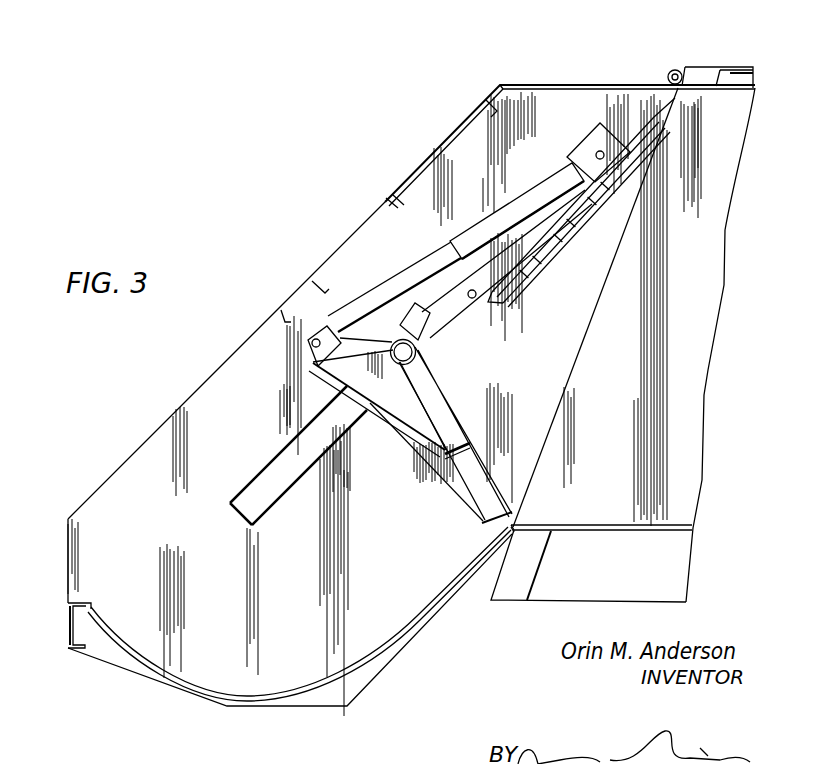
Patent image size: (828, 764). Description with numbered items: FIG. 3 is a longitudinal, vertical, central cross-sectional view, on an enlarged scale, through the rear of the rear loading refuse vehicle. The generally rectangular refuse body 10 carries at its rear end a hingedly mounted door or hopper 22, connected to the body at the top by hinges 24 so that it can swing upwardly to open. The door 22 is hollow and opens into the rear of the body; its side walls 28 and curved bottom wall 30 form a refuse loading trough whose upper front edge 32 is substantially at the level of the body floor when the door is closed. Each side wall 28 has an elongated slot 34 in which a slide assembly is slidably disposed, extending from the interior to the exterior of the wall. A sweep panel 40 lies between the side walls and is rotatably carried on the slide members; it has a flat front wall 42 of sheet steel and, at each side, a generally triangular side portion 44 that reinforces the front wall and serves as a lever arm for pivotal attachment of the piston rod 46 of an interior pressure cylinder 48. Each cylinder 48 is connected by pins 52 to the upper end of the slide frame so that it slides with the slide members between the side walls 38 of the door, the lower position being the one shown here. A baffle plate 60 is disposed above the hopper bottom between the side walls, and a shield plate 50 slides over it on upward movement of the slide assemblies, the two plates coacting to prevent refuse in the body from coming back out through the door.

The refuse body 10 is at (739, 163).
The door 22 is at (417, 167).
The hinges 24 is at (671, 71).
The side walls 28 is at (207, 380).
The curved bottom wall 30 is at (334, 692).
The upper front edge 32 is at (514, 529).
The elongated slot 34 is at (277, 495).
The side walls 38 is at (421, 367).
The sweep panel 40 is at (493, 448).
The flat front wall 42 is at (453, 410).
The side portion 44 is at (352, 366).
The piston rod 46 is at (396, 287).
The pressure cylinder 48 is at (543, 184).
The shield plate 50 is at (473, 305).
The pins 52 is at (599, 151).
The baffle plate 60 is at (562, 247).